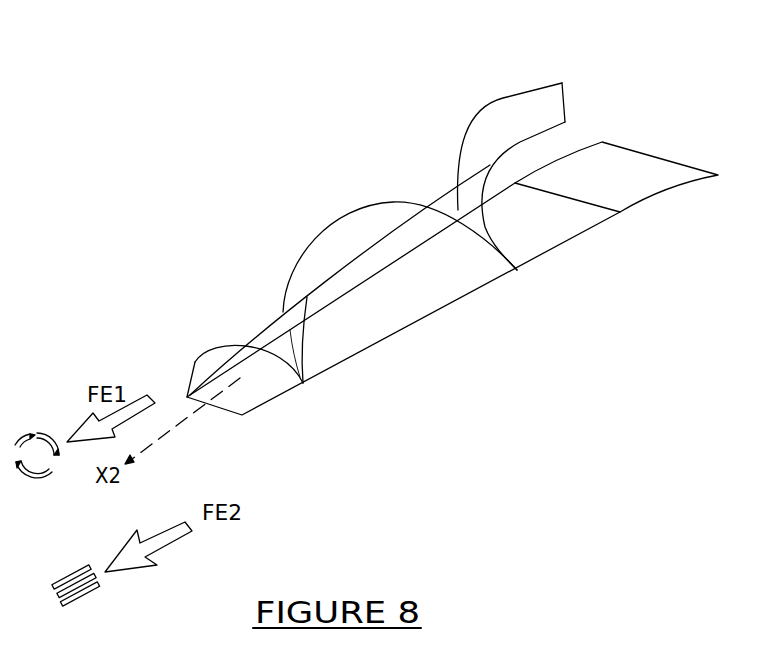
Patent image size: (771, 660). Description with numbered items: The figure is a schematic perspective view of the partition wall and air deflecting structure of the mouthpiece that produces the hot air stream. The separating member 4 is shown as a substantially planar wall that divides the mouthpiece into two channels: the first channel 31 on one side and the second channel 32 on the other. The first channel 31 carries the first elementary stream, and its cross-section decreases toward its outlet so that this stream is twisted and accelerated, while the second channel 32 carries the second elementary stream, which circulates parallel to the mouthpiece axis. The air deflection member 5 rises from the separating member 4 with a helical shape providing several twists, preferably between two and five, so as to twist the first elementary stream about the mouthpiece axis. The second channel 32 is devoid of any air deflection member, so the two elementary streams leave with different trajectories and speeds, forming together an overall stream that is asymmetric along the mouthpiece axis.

The separating member 4 is at (377, 340).
The air deflection member 5 is at (530, 110).
The first channel 31 is at (236, 336).
The second channel 32 is at (303, 394).